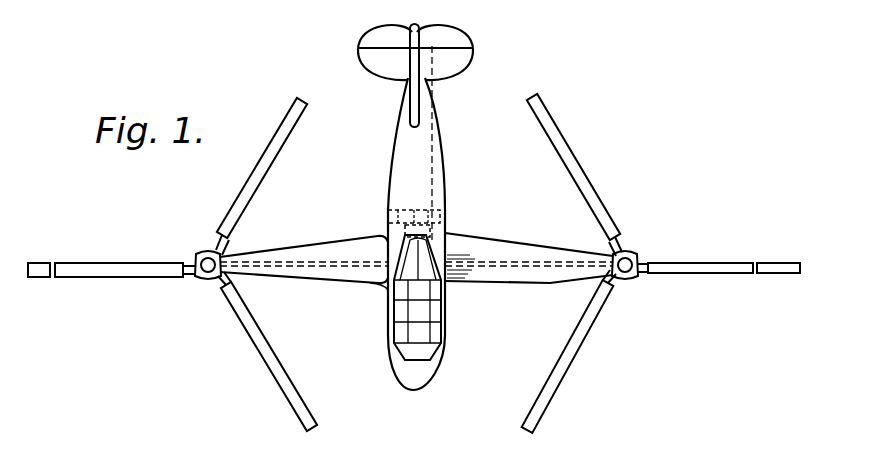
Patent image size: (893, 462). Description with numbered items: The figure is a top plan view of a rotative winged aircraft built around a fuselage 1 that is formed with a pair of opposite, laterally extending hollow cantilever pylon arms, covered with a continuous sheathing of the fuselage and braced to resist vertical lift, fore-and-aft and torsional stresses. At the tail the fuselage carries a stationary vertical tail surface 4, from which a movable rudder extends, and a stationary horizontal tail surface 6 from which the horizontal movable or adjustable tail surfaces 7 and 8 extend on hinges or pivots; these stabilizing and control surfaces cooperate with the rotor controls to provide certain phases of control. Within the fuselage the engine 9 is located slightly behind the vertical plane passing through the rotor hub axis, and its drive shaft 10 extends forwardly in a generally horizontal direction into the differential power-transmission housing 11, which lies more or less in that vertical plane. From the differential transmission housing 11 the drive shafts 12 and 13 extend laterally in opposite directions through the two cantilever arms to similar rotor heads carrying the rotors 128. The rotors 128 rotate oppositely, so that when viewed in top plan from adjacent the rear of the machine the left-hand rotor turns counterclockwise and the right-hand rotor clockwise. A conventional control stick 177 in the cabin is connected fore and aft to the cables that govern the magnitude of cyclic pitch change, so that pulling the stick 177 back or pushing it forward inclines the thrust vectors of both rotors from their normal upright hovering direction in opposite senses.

The fuselage 1 is at (430, 151).
The stationary vertical tail surface 4 is at (412, 93).
The stationary horizontal tail surface 6 is at (455, 62).
The horizontal movable tail surface 7 is at (379, 34).
The horizontal movable tail surface 8 is at (452, 34).
The engine 9 is at (445, 207).
The drive shaft 10 is at (448, 232).
The differential power-transmission housing 11 is at (386, 288).
The drive shaft 12 is at (284, 267).
The drive shaft 13 is at (524, 268).
The control stick 177 is at (442, 312).
The rotors 128 is at (718, 263).